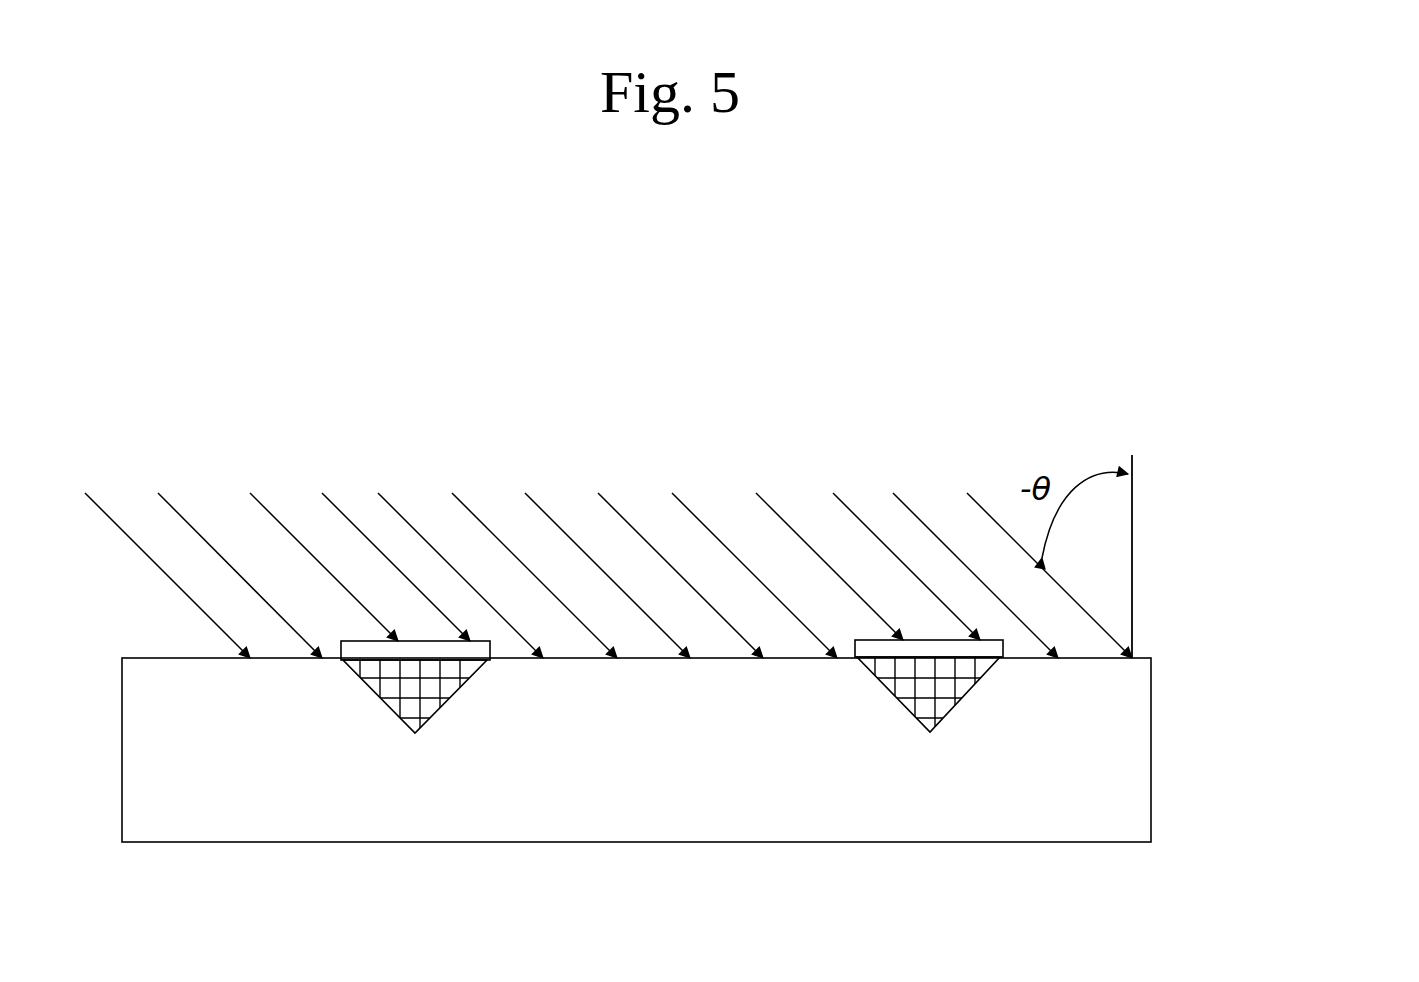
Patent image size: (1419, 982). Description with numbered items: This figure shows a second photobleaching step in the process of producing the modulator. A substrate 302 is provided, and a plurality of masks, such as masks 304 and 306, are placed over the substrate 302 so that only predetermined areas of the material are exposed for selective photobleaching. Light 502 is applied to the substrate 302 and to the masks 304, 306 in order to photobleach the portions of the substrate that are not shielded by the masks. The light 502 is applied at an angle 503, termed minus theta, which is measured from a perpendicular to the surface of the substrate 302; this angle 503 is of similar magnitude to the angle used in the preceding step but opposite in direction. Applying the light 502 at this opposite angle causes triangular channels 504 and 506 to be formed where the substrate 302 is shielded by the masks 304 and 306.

The substrate 302 is at (724, 750).
The mask 304 is at (547, 533).
The mask 306 is at (861, 503).
The light 502 is at (1260, 572).
The angle 503 is at (1123, 485).
The triangular channel 504 is at (455, 724).
The triangular channel 506 is at (970, 721).